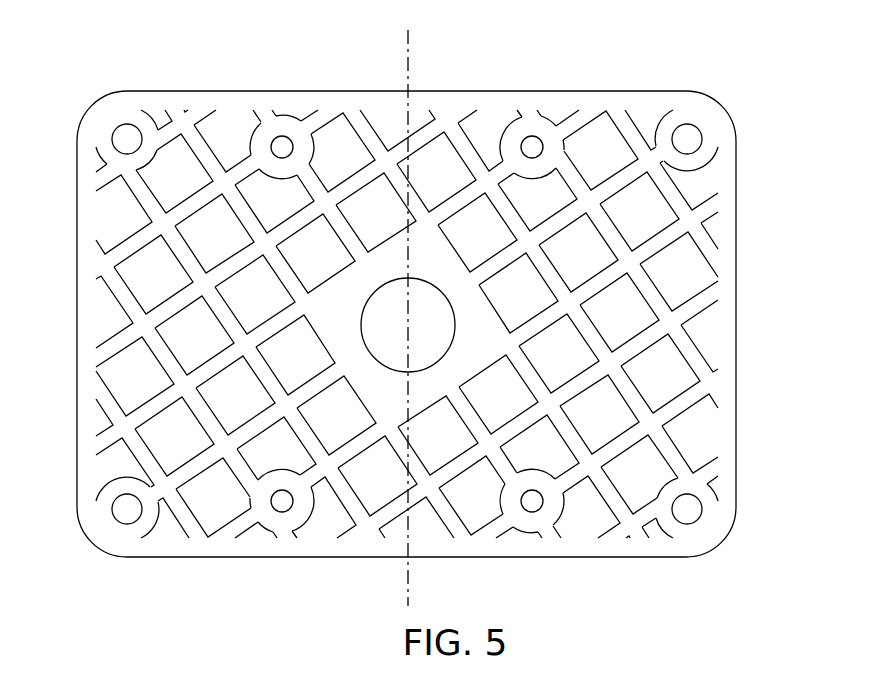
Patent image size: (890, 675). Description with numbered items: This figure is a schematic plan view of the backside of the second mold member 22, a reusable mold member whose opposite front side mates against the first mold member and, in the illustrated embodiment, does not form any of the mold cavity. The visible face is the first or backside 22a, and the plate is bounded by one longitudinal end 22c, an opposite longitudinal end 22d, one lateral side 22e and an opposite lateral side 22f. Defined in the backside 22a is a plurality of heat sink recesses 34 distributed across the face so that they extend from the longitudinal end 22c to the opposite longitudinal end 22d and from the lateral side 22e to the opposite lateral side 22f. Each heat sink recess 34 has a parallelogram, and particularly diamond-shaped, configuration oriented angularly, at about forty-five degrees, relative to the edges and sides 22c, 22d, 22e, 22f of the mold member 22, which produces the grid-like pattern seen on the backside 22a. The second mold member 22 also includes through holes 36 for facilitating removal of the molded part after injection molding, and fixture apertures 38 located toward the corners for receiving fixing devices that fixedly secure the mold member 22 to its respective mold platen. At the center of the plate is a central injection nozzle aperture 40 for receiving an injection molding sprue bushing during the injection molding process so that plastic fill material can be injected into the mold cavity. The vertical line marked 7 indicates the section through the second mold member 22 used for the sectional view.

The second mold member 22 is at (784, 313).
The first or backside of second mold member 22a is at (170, 110).
The longitudinal end 22c is at (742, 380).
The opposite longitudinal end 22d is at (78, 330).
The lateral side 22e is at (352, 557).
The opposite lateral side 22f is at (642, 94).
The heat sink recesses 34 is at (442, 158).
The through holes 36 is at (282, 147).
The fixture apertures 38 is at (125, 137).
The central injection nozzle aperture 40 is at (372, 336).
The section line 7- 7 is at (408, 33).